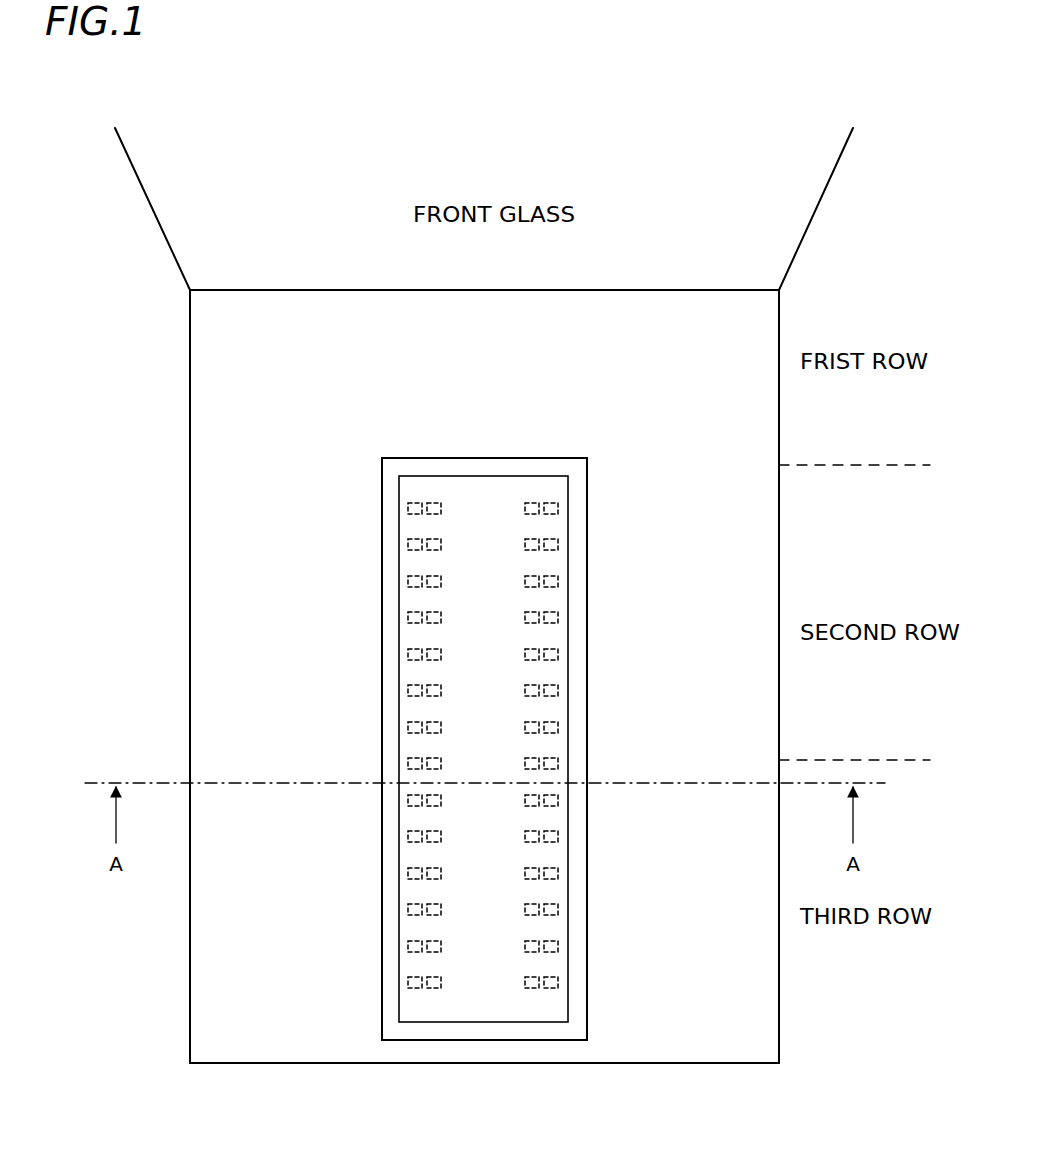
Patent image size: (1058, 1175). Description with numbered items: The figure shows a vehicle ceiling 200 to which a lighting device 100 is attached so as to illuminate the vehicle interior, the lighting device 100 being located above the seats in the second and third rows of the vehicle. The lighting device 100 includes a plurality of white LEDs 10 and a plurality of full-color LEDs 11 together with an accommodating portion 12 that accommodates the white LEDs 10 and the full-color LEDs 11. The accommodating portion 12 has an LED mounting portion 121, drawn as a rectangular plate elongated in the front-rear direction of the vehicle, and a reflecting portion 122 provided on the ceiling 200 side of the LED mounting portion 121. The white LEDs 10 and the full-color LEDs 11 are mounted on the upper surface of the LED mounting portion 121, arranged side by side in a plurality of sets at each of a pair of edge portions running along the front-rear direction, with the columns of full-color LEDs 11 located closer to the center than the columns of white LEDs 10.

The ceiling 200 is at (190, 495).
The lighting device 100 is at (567, 433).
The accommodating portion 12 is at (429, 780).
The reflecting portion 122 is at (390, 693).
The LED mounting portion 121 is at (410, 892).
The white LED 10 is at (493, 758).
The full-color LED 11 is at (440, 502).